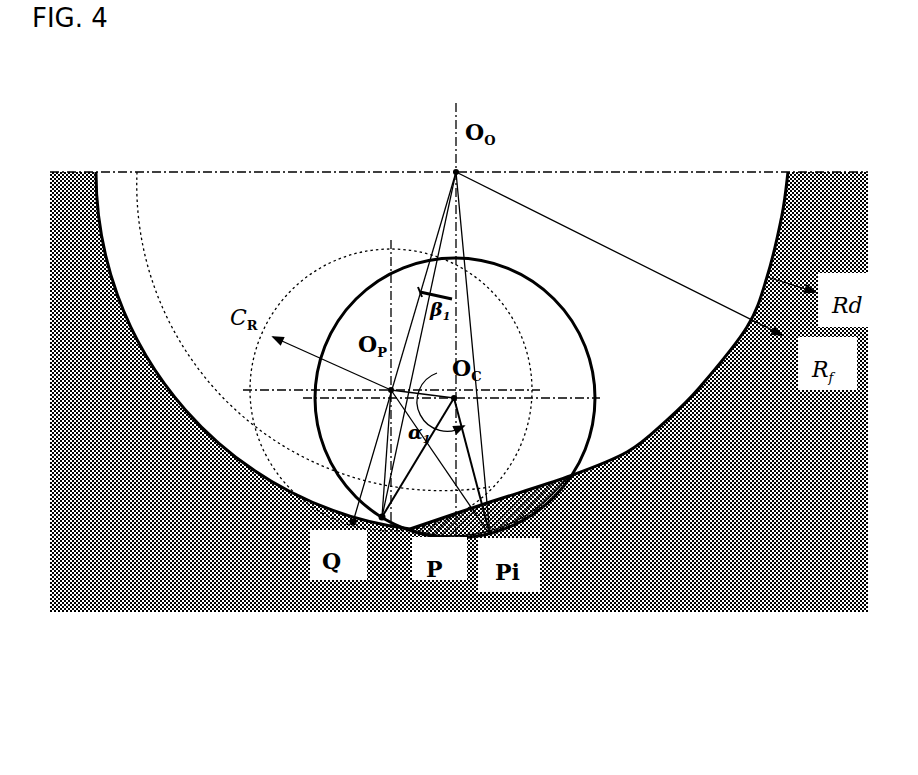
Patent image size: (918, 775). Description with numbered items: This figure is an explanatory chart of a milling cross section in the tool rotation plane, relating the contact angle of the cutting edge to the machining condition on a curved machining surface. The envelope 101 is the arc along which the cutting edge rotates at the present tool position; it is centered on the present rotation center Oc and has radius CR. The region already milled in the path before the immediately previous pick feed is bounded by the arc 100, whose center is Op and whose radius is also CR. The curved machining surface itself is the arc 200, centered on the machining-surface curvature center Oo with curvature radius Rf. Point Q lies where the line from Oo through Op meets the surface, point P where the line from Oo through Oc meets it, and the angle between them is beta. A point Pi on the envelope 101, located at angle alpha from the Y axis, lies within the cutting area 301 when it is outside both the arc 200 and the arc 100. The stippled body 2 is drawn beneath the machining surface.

The tip body 2 is at (762, 593).
The arc 100 is at (310, 278).
The envelope 101 is at (407, 263).
The arc 200 is at (772, 262).
The cutting area 301 is at (530, 513).